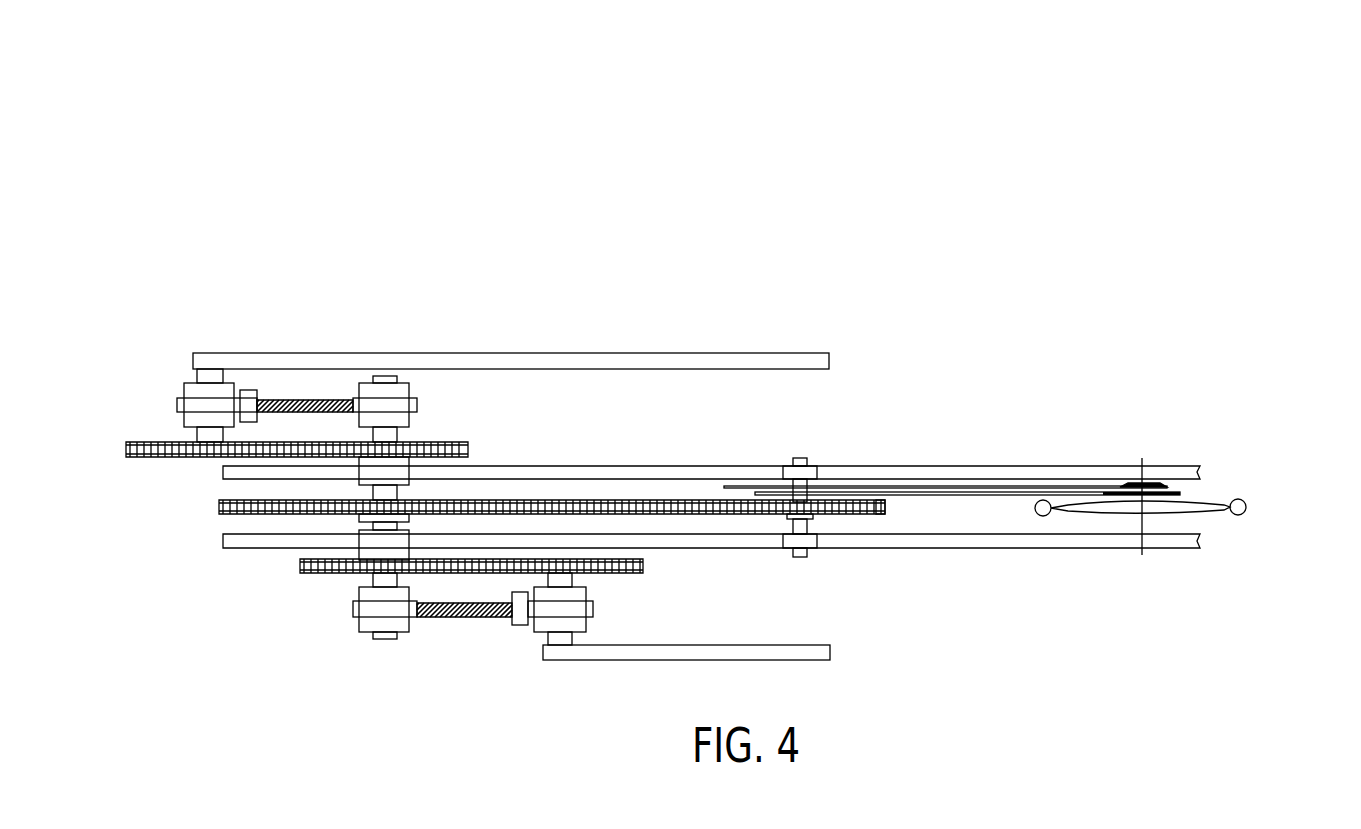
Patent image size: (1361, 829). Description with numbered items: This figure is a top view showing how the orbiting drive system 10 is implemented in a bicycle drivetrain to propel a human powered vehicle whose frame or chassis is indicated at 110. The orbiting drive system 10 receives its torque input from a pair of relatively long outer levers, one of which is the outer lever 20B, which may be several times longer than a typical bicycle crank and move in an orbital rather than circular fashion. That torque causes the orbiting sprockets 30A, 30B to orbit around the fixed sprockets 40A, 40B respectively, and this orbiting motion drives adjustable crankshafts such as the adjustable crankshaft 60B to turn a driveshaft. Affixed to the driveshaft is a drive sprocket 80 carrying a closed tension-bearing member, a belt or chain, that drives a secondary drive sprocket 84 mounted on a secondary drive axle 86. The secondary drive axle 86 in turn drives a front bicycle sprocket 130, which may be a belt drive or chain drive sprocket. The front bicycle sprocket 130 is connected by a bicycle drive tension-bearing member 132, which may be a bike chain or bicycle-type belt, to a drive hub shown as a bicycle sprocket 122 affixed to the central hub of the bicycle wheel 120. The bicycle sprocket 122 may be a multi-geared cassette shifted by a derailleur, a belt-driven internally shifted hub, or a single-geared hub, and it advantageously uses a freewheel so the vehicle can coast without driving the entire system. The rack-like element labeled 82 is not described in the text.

The orbiting drive system 10 is at (507, 170).
The outer lever 20B is at (718, 362).
The orbiting sprocket 30B is at (150, 442).
The fixed sprocket 40B is at (468, 442).
The adjustable crankshaft 60B is at (307, 410).
The drive sprocket 80 is at (219, 507).
The central rack 82 is at (595, 510).
The secondary drive sprocket 84 is at (885, 508).
The secondary drive axle 86 is at (805, 552).
The front bicycle sprocket 130 is at (733, 487).
The bicycle drive tension-bearing member 132 is at (933, 490).
The bicycle sprocket 122 is at (1180, 493).
The bicycle wheel 120 is at (1243, 513).
The frame 110 is at (1030, 542).
The orbiting sprocket 30A is at (643, 566).
The fixed sprocket 40A is at (300, 570).